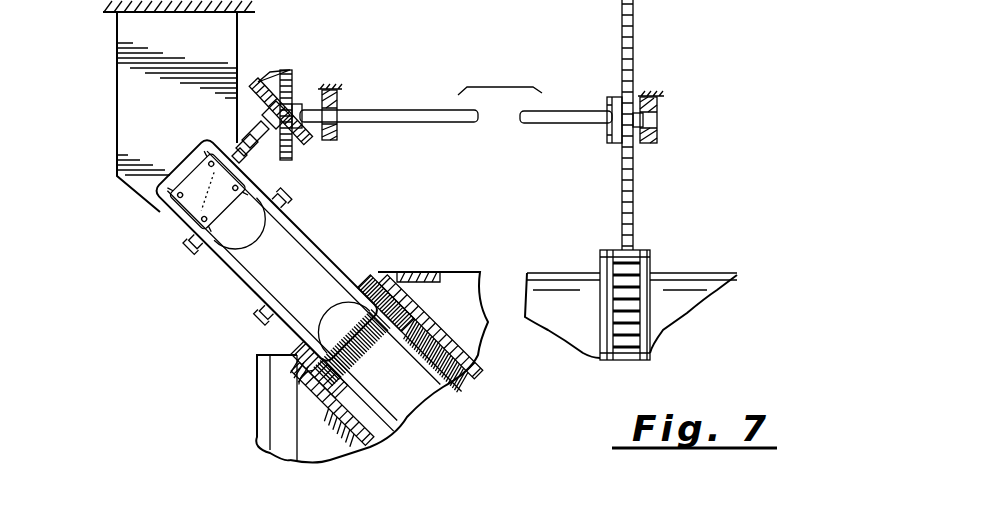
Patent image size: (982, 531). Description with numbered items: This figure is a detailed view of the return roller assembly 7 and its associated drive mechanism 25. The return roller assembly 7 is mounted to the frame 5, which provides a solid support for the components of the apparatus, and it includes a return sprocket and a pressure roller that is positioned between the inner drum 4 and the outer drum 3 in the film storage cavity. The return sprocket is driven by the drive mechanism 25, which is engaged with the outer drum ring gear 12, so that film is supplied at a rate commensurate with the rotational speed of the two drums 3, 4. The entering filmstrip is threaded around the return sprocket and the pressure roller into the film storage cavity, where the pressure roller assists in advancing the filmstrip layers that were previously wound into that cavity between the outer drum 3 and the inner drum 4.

The outer drum 3 is at (423, 273).
The inner drum 4 is at (333, 443).
The frame 5 is at (135, 85).
The return roller assembly 7 is at (116, 274).
The outer drum ring gear 12 is at (643, 238).
The drive mechanism 25 is at (397, 117).